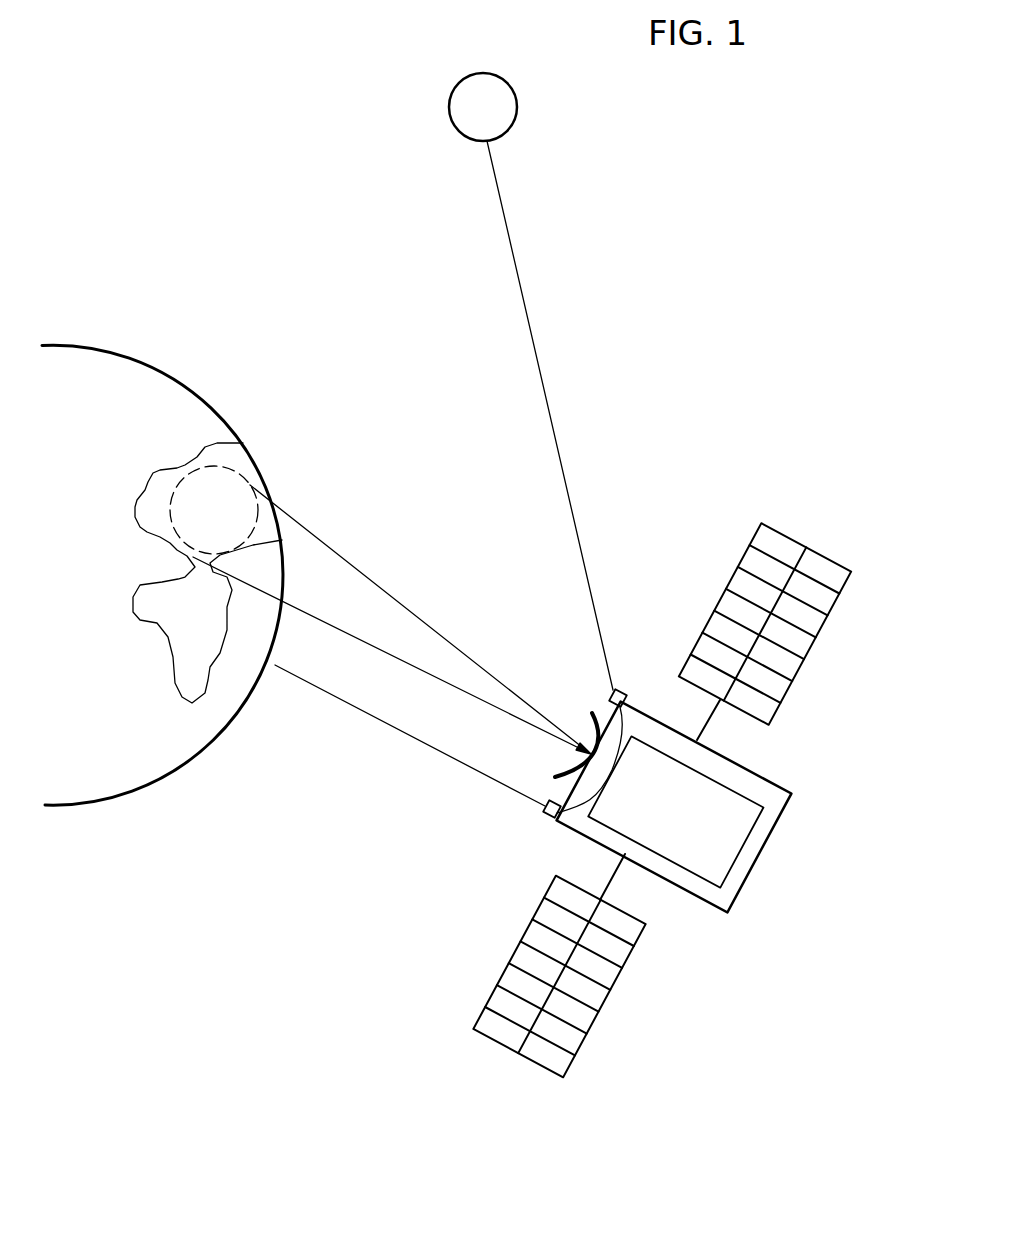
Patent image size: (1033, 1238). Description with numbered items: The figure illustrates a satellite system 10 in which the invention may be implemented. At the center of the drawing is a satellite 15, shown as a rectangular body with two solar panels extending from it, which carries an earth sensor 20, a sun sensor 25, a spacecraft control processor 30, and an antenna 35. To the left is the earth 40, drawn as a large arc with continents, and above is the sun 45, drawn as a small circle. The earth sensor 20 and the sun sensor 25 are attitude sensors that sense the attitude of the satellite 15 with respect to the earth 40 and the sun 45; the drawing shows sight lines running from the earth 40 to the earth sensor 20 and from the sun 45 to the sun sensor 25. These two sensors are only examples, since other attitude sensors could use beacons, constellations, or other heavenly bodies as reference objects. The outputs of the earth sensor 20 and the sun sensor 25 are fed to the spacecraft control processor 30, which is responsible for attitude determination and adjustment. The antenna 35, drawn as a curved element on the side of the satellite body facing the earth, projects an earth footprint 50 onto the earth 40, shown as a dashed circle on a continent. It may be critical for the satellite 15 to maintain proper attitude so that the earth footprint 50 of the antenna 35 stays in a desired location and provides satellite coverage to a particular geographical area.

The satellite system 10 is at (343, 987).
The satellite 15 is at (662, 800).
The earth sensor 20 is at (544, 814).
The sun sensor 25 is at (623, 693).
The spacecraft control processor 30 is at (700, 893).
The antenna 35 is at (590, 720).
The earth 40 is at (212, 407).
The sun 45 is at (457, 128).
The earth footprint 50 is at (237, 472).